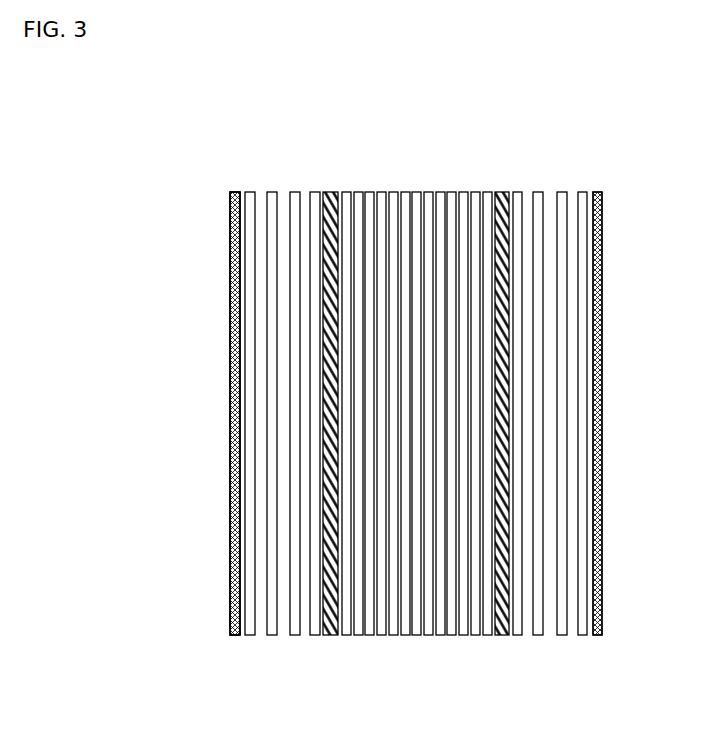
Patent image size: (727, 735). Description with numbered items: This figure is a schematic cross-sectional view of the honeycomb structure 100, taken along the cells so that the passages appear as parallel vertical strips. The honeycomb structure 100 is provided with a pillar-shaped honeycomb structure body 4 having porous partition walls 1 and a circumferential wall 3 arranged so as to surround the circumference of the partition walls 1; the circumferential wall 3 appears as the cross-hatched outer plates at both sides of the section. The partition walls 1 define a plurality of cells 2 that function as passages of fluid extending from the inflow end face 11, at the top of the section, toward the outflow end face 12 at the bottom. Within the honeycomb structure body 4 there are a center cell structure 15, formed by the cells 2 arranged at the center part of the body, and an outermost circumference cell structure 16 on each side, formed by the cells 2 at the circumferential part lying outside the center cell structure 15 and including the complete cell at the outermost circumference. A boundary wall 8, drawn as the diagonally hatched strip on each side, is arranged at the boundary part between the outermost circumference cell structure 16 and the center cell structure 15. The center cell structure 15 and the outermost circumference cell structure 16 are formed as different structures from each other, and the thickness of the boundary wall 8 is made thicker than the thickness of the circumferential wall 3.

The honeycomb structure 100 is at (658, 91).
The inflow end face 11 is at (238, 180).
The outflow end face 12 is at (230, 658).
The honeycomb structure body 4 is at (605, 282).
The circumferential wall 3 is at (230, 362).
The outermost circumference cell structure 16 is at (320, 642).
The center cell structure 15 is at (490, 642).
The cells 2 is at (305, 210).
The partition walls 1 is at (468, 192).
The boundary wall 8 is at (323, 495).